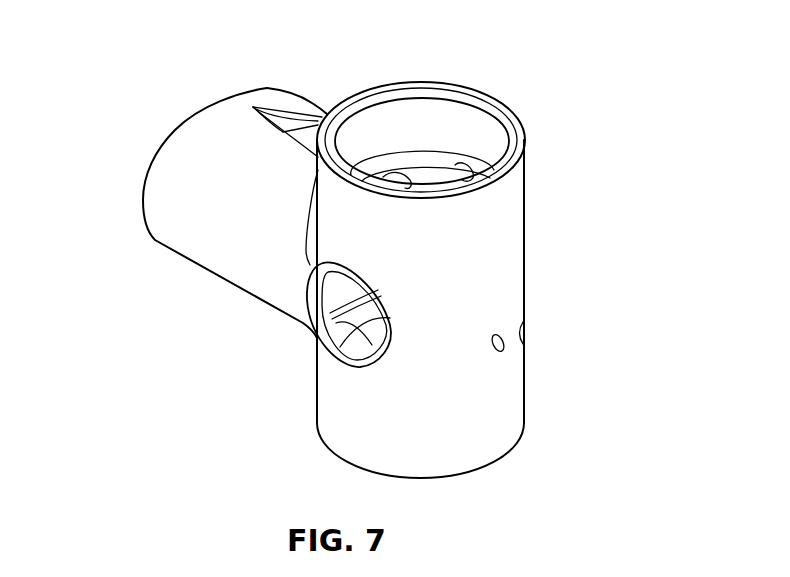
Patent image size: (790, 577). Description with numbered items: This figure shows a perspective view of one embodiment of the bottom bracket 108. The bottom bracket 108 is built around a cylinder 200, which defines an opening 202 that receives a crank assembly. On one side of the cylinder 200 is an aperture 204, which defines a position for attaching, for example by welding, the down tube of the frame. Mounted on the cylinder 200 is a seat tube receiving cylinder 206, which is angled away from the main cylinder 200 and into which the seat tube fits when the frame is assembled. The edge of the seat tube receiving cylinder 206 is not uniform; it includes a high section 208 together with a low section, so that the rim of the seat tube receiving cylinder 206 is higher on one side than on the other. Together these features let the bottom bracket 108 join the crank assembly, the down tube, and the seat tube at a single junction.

The bottom bracket 108 is at (308, 74).
The cylinder 200 is at (508, 265).
The opening 202 is at (425, 120).
The aperture 204 is at (340, 328).
The seat tube receiving cylinder 206 is at (220, 265).
The high section 208 is at (147, 177).